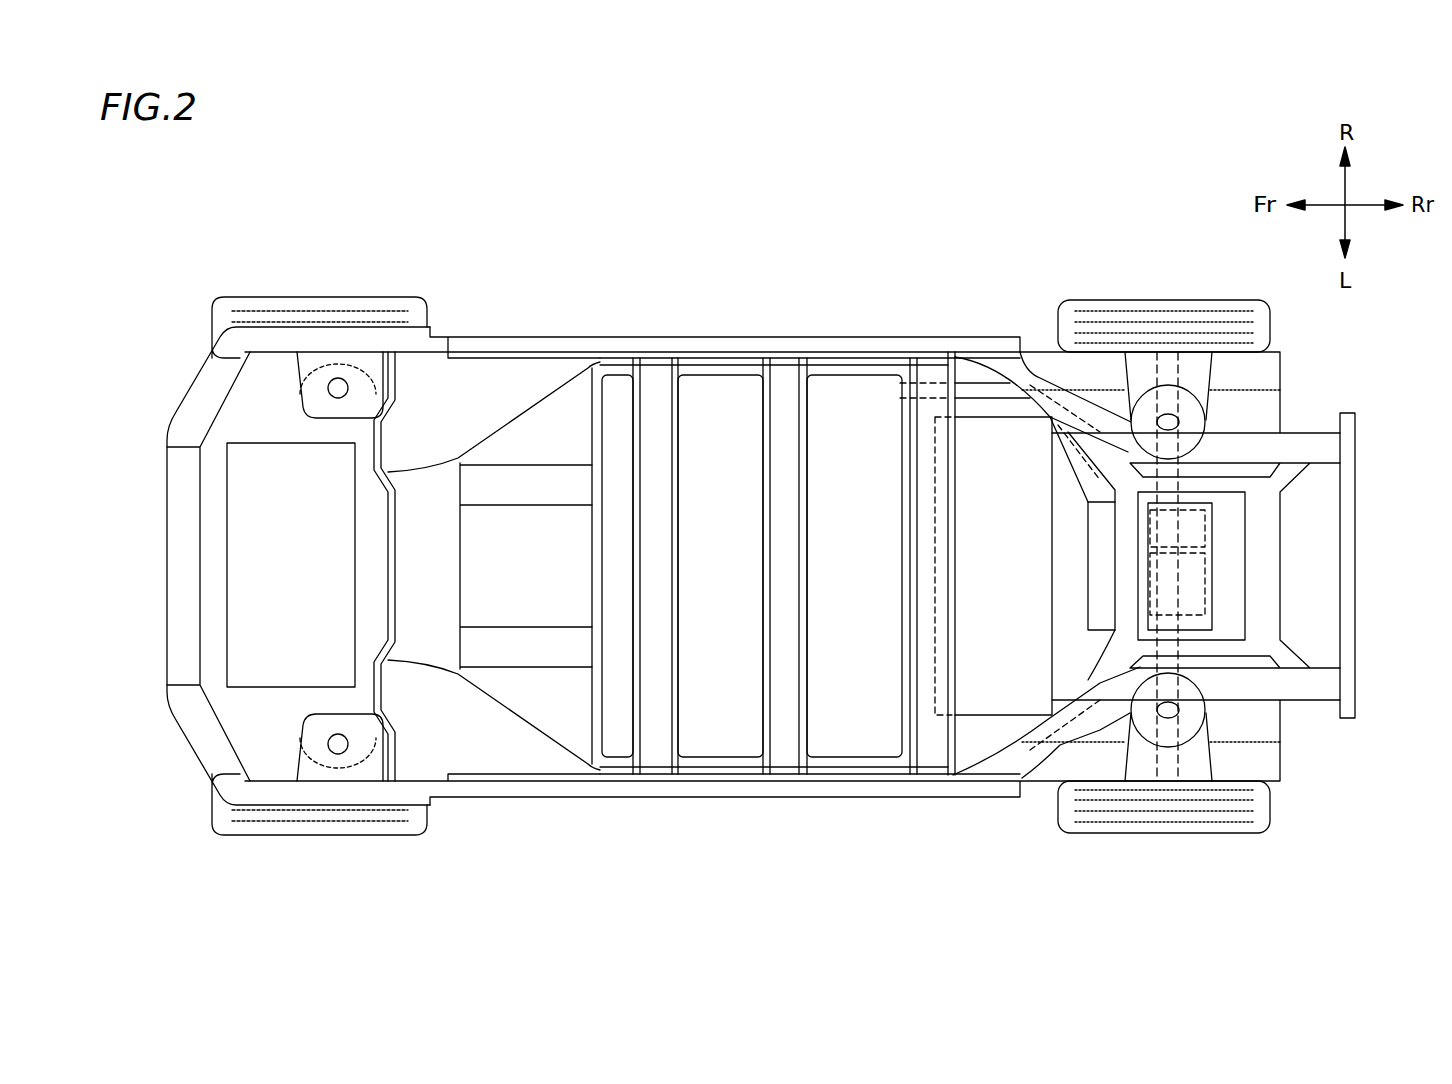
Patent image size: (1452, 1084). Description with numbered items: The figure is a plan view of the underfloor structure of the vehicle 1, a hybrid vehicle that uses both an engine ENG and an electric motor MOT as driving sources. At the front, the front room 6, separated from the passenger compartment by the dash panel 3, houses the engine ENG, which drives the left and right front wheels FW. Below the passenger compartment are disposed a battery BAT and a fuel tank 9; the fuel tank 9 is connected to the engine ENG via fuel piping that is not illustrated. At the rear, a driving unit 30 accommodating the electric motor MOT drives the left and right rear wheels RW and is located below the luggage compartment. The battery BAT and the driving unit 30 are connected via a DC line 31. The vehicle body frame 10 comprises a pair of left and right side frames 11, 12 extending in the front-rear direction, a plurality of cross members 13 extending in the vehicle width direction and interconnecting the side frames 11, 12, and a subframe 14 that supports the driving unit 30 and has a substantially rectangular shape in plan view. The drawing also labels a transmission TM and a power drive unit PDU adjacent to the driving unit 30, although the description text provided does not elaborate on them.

The vehicle 1 is at (777, 292).
The dash panel 3 is at (388, 427).
The front room 6 is at (277, 729).
The fuel tank 9 is at (1020, 705).
The vehicle body frame 10 is at (893, 337).
The side frame 11 is at (826, 336).
The side frame 12 is at (860, 800).
The cross member 13 is at (428, 497).
The subframe 14 is at (1225, 466).
The driving unit 30 is at (1213, 552).
The DC line 31 is at (983, 368).
The engine ENG is at (293, 443).
The front wheel FW is at (350, 297).
The rear wheel RW is at (1200, 300).
The battery BAT is at (622, 460).
The transmission TM is at (1193, 528).
The electric motor MOT is at (1187, 585).
The power drive unit PDU is at (1103, 630).